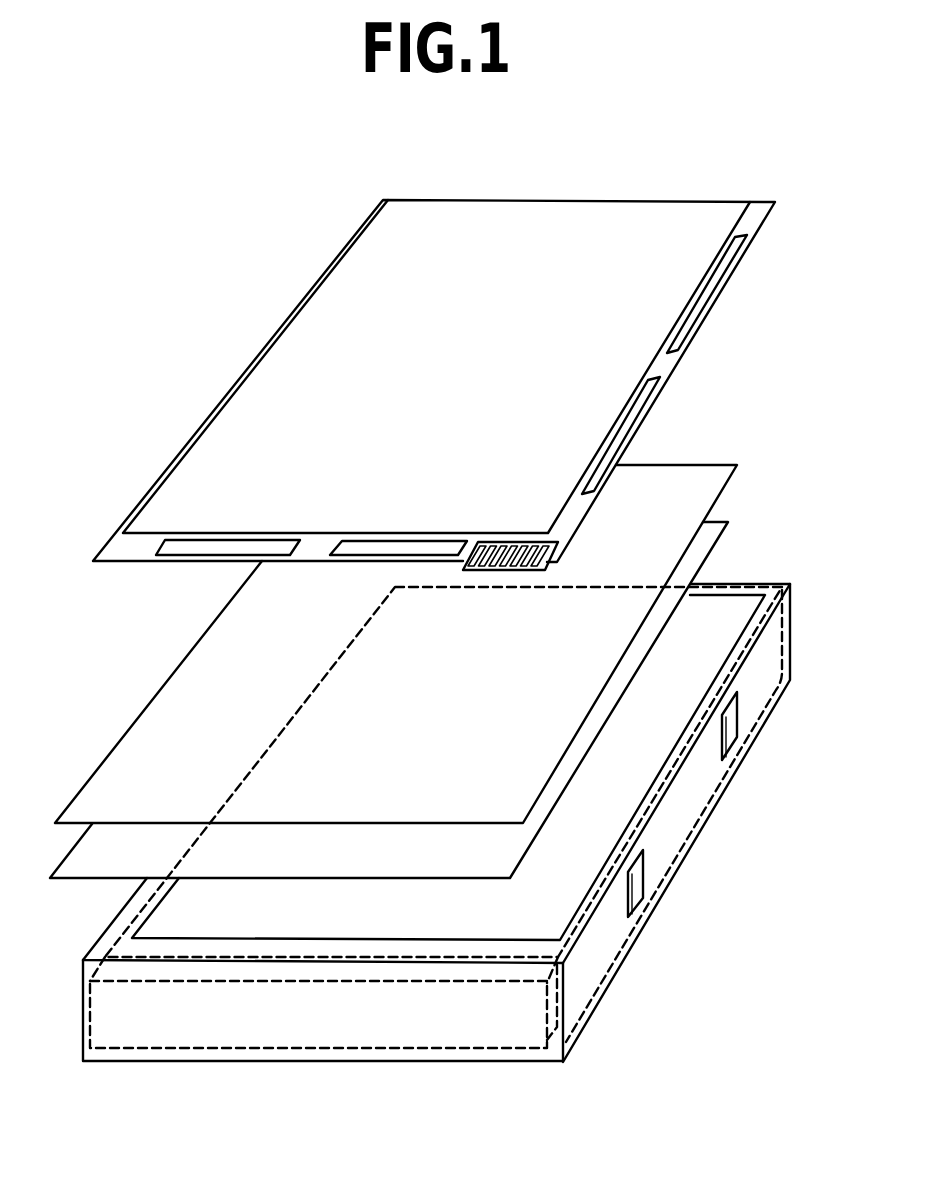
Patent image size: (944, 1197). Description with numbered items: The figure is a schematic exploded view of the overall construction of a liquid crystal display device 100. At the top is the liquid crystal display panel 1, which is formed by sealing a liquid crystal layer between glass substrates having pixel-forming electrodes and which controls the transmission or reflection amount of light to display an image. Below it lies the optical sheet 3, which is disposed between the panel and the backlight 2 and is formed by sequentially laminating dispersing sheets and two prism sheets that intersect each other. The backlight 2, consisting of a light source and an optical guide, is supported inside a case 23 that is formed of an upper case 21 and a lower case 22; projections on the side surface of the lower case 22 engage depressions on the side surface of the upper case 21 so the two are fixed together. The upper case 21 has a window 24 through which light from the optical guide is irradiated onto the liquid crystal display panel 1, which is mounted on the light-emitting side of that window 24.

The liquid crystal display device 100 is at (122, 376).
The liquid crystal display panel 1 is at (305, 297).
The optical sheet 3 is at (193, 677).
The backlight 2 is at (296, 1020).
The upper case 21 is at (525, 947).
The lower case 22 is at (590, 967).
The case 23 is at (706, 869).
The window 24 is at (713, 612).